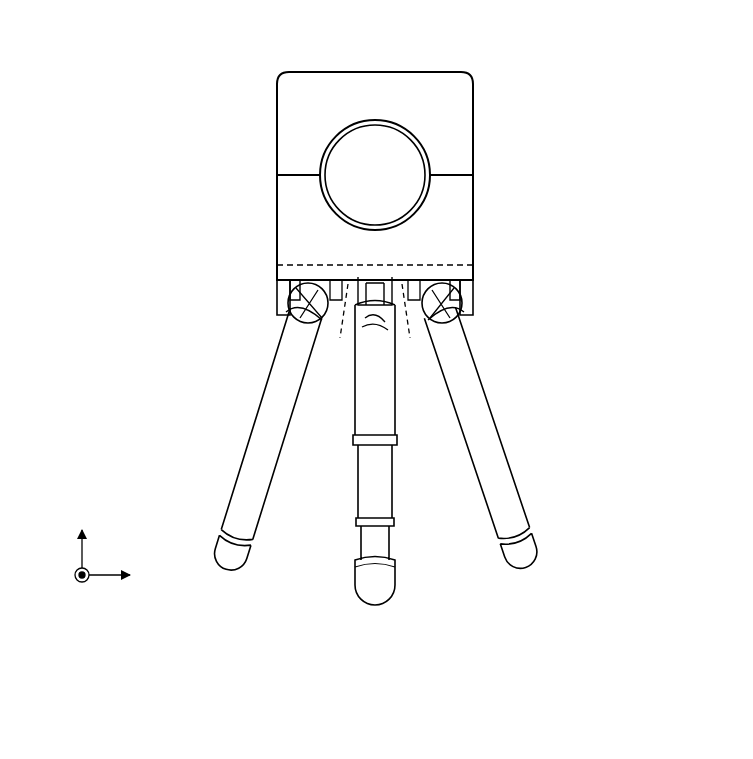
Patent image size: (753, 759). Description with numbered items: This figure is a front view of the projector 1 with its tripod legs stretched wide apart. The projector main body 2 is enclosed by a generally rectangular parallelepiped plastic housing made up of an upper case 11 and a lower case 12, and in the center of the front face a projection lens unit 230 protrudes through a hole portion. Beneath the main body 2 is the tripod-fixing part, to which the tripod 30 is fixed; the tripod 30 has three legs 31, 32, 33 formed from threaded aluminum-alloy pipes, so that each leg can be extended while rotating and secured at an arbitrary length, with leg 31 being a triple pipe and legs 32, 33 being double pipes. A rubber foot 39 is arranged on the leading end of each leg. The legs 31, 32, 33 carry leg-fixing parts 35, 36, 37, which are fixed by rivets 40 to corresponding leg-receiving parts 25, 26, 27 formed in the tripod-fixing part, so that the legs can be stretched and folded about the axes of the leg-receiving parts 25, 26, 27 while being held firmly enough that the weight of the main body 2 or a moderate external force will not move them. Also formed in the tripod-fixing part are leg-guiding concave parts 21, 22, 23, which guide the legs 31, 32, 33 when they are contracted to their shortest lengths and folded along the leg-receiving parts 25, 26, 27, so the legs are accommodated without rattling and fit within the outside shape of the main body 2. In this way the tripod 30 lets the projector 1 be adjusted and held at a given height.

The projector 1 is at (332, 340).
The projector main body 2 is at (390, 183).
The upper case 11 is at (458, 121).
The lower case 12 is at (458, 199).
The projection lens unit 230 is at (348, 120).
The leg-guiding concave part 21 is at (352, 298).
The leg-guiding concave part 22 is at (438, 285).
The leg-guiding concave part 23 is at (312, 285).
The leg-receiving part 25 is at (376, 278).
The leg-receiving part 26 is at (465, 285).
The leg-receiving part 27 is at (285, 285).
The tripod 30 is at (408, 453).
The leg 31 is at (403, 453).
The leg 32 is at (496, 440).
The leg 33 is at (280, 441).
The leg-fixing part 35 is at (372, 318).
The leg-fixing part 36 is at (460, 320).
The leg-fixing part 37 is at (290, 320).
The rubber foot 39 is at (238, 572).
The rivet 40 is at (377, 325).